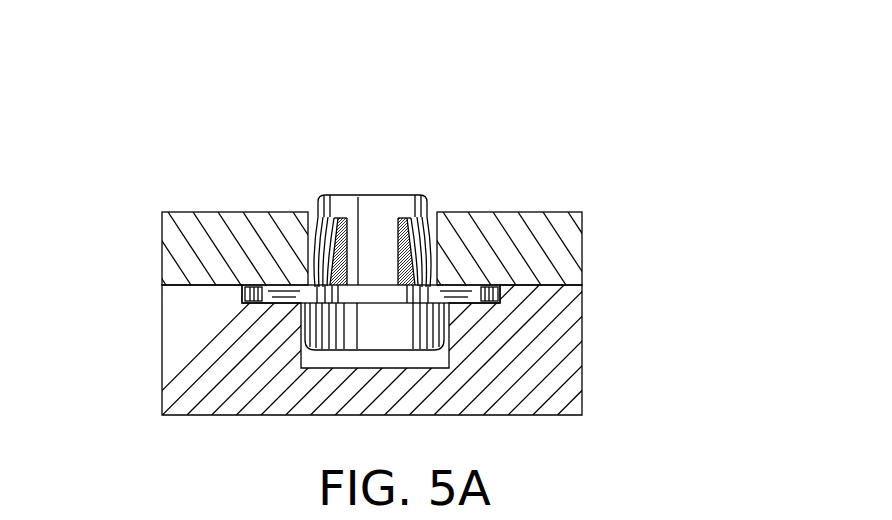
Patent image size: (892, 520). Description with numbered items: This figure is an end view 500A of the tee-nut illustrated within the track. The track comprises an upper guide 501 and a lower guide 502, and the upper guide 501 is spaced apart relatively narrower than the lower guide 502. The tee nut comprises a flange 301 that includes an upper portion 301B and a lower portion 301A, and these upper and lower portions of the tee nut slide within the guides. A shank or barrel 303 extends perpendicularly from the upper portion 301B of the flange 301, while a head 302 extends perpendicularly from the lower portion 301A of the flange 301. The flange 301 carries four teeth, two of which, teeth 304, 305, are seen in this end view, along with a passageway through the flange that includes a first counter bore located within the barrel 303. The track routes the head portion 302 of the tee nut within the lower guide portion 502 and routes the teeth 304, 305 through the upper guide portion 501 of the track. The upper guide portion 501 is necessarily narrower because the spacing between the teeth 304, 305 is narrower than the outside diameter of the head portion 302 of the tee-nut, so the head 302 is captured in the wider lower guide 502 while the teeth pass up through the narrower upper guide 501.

The end view 500A is at (566, 84).
The upper guide 501 is at (275, 254).
The lower guide 502 is at (525, 375).
The flange 301 is at (243, 295).
The lower portion of the flange 301A is at (278, 310).
The upper portion of the flange 301B is at (472, 286).
The head 302 is at (390, 323).
The shank or barrel 303 is at (372, 213).
The tooth 304 is at (418, 252).
The tooth 305 is at (327, 252).